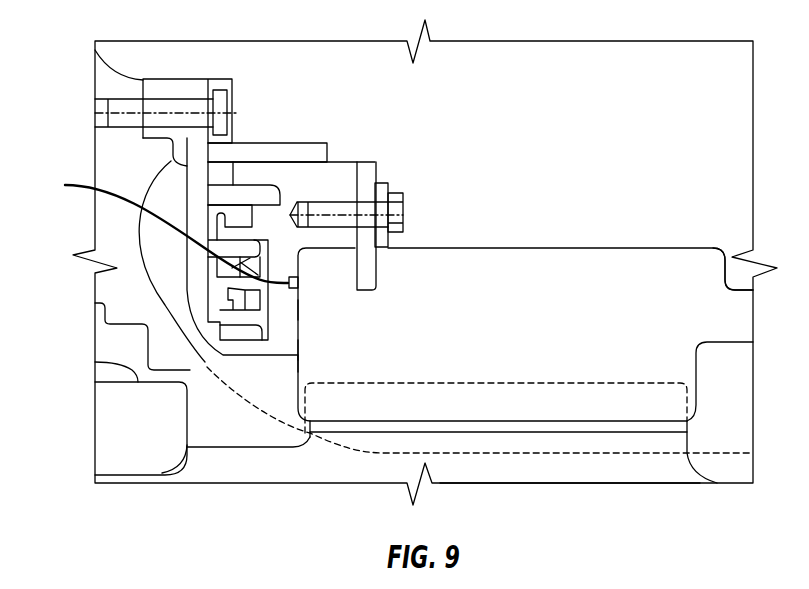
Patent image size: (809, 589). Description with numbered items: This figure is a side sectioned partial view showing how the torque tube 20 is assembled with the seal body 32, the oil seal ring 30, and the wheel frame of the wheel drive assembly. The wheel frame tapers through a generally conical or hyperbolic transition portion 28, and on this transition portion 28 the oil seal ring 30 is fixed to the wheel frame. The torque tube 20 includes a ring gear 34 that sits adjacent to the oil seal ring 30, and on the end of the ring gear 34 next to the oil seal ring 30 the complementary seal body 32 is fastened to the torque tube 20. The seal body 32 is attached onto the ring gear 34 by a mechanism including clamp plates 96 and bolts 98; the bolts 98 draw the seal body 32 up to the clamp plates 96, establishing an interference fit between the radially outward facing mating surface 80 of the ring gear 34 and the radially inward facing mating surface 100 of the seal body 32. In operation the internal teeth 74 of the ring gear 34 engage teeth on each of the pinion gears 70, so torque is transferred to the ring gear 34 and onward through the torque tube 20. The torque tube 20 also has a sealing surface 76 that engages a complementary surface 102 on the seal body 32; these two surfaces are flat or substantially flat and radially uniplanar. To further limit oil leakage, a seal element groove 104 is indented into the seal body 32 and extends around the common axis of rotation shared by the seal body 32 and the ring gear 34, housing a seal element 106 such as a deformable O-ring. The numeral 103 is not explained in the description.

The torque tube 20 is at (668, 248).
The transition portion 28 is at (103, 158).
The oil seal ring 30 is at (158, 78).
The seal body 32 is at (333, 162).
The ring gear 34 is at (570, 248).
The pinion gear 70 is at (537, 468).
The internal teeth 74 is at (310, 422).
The sealing surface 76 is at (293, 362).
The radially outward facing mating surface 80 is at (342, 248).
The clamp plate 96 is at (370, 162).
The bolt 98 is at (388, 192).
The radially inward facing mating surface 100 is at (320, 250).
The complementary surface 102 is at (300, 327).
The chamber 103 is at (247, 357).
The seal element groove 104 is at (302, 282).
The seal element 106 is at (66, 185).